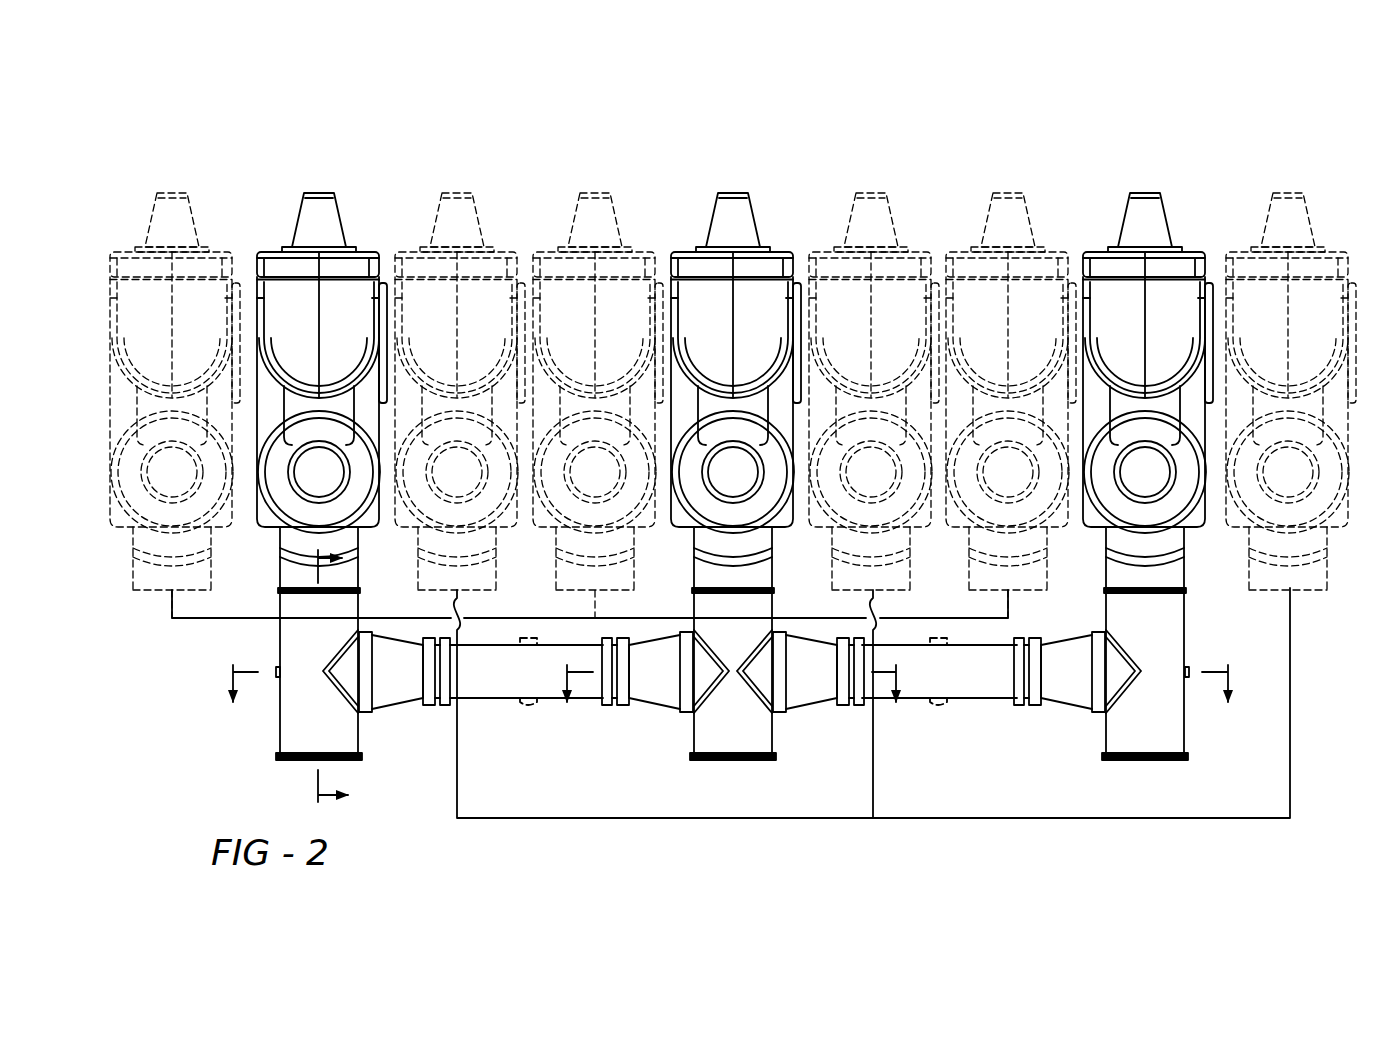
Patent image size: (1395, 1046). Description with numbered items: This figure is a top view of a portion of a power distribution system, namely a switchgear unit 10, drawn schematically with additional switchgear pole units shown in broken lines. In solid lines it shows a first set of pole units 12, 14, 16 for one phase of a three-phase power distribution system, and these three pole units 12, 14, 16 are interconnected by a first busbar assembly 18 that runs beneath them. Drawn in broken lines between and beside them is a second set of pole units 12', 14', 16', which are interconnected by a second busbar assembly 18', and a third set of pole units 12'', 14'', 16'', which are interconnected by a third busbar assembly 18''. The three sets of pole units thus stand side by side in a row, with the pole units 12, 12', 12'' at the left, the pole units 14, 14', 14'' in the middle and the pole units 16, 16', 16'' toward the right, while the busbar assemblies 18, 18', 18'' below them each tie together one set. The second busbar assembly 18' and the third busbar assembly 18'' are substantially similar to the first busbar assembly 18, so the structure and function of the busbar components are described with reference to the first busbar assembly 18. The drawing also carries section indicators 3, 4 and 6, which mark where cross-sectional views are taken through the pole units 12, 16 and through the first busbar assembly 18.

The switchgear unit 10 is at (631, 120).
The pole unit 12 is at (353, 445).
The pole unit 12' is at (175, 374).
The pole unit 12'' is at (460, 360).
The pole unit 14 is at (733, 445).
The pole unit 14' is at (598, 374).
The pole unit 14'' is at (874, 360).
The pole unit 16 is at (1113, 445).
The pole unit 16' is at (1011, 374).
The pole unit 16'' is at (1291, 360).
The busbar assembly 18 is at (733, 704).
The second busbar assembly 18' is at (309, 648).
The third busbar assembly 18'' is at (1081, 728).
The section line 3 is at (347, 684).
The section line 4 is at (732, 709).
The section line 6 is at (729, 709).